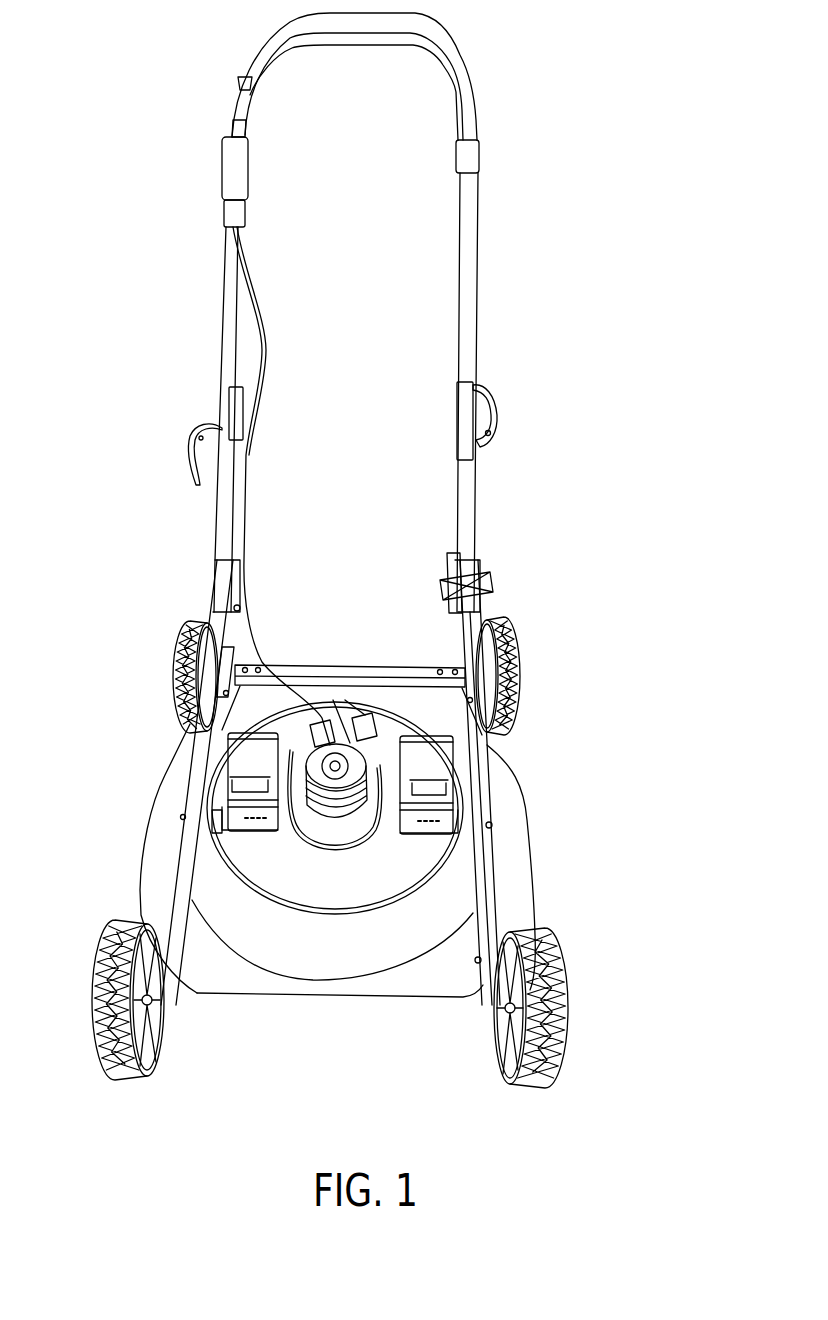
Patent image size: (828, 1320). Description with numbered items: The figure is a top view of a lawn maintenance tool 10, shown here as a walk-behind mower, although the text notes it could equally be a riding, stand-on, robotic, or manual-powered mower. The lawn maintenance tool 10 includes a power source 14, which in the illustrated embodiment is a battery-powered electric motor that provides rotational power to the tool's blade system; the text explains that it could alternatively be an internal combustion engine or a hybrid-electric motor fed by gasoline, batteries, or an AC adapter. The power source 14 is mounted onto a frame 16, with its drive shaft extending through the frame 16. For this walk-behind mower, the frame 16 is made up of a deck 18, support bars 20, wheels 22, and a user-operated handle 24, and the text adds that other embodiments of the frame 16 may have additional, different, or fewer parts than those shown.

The lawn maintenance tool 10 is at (366, 550).
The power source 14 is at (360, 768).
The frame 16 is at (486, 863).
The deck 18 is at (511, 905).
The support bars 20 is at (192, 808).
The wheels 22 is at (562, 990).
The user-operated handle 24 is at (470, 314).